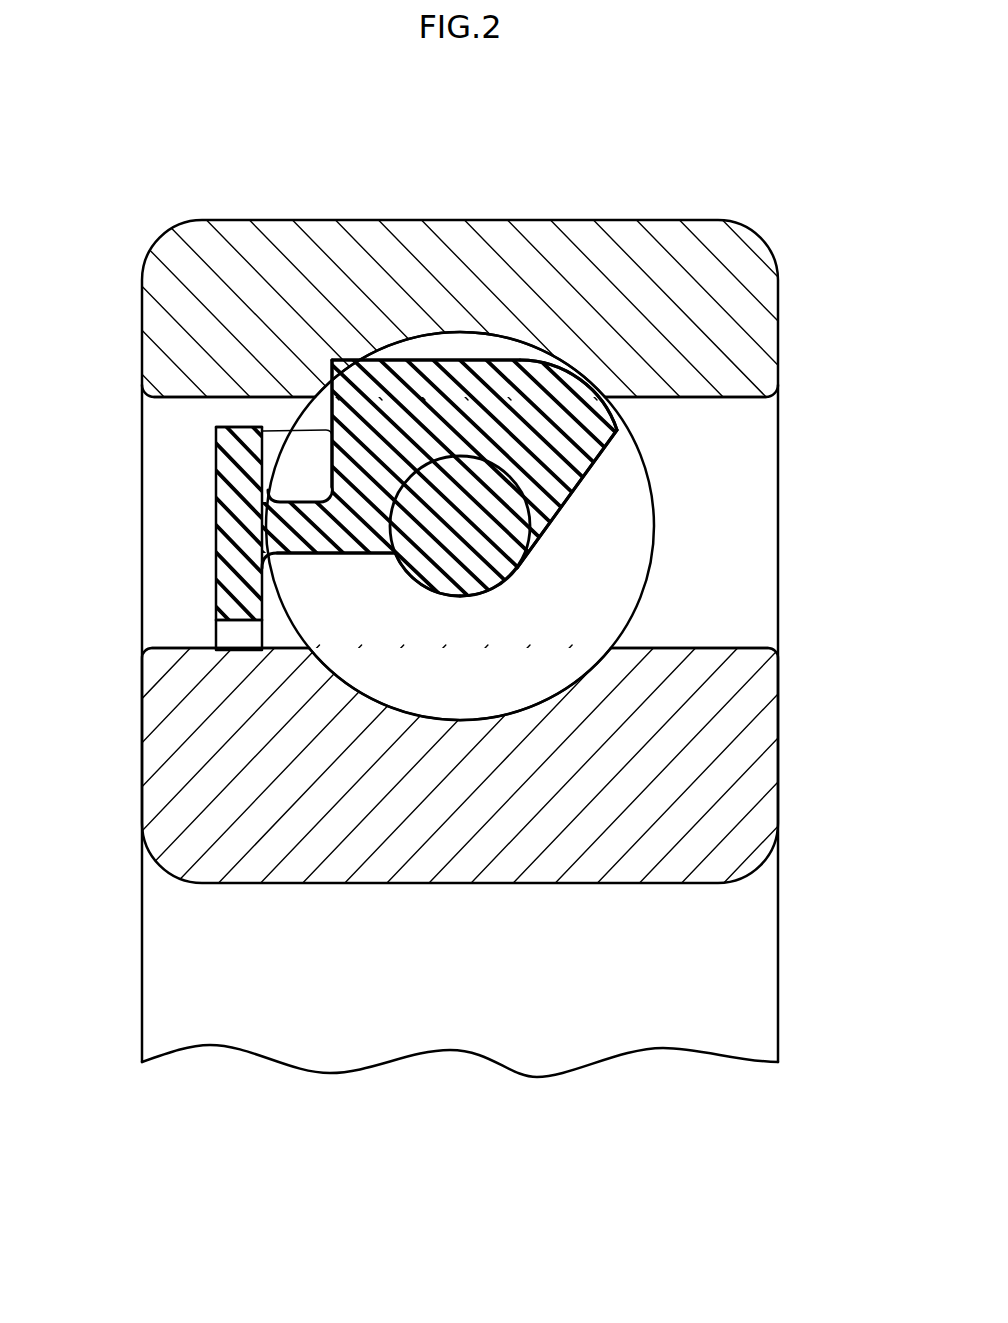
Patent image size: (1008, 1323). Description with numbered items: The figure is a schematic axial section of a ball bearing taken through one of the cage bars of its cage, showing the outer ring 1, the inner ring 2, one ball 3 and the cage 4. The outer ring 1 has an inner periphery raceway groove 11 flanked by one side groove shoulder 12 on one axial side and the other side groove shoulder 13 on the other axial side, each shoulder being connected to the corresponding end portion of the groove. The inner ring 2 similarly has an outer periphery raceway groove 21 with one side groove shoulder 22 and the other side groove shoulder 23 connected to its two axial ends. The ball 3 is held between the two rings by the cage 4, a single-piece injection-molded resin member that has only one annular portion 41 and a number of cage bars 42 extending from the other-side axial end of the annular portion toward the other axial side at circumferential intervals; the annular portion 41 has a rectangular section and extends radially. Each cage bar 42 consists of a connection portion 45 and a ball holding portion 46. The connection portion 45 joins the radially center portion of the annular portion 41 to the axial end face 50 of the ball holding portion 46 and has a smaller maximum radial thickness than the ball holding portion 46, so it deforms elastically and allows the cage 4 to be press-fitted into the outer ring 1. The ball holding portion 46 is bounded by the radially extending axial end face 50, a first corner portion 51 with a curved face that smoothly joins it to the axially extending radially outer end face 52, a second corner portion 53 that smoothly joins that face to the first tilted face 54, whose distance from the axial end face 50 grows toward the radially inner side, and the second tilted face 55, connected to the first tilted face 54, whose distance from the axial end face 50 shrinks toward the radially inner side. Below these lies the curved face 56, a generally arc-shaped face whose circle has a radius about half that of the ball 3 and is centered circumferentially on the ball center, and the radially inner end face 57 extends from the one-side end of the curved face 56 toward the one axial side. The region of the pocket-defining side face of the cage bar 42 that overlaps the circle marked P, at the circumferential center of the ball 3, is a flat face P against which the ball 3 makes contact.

The outer ring 1 is at (279, 258).
The inner ring 2 is at (413, 837).
The ball 3 is at (600, 608).
The cage 4 is at (230, 543).
The inner periphery raceway groove 11 is at (480, 353).
The one side groove shoulder 12 is at (221, 399).
The other side groove shoulder 13 is at (663, 397).
The outer periphery raceway groove 21 is at (417, 713).
The one side groove shoulder 22 is at (177, 650).
The other side groove shoulder 23 is at (710, 648).
The annular portion 41 is at (230, 498).
The cage bar 42 is at (367, 513).
The connection portion 45 is at (307, 537).
The ball holding portion 46 is at (523, 417).
The axial end face 50 is at (217, 441).
The first corner portion 51 is at (345, 368).
The radially outer end face 52 is at (418, 358).
The second corner portion 53 is at (573, 363).
The first tilted face 54 is at (620, 410).
The second tilted face 55 is at (580, 493).
The curved face 56 is at (485, 603).
The radially inner end face 57 is at (342, 552).
The flat face P is at (455, 597).